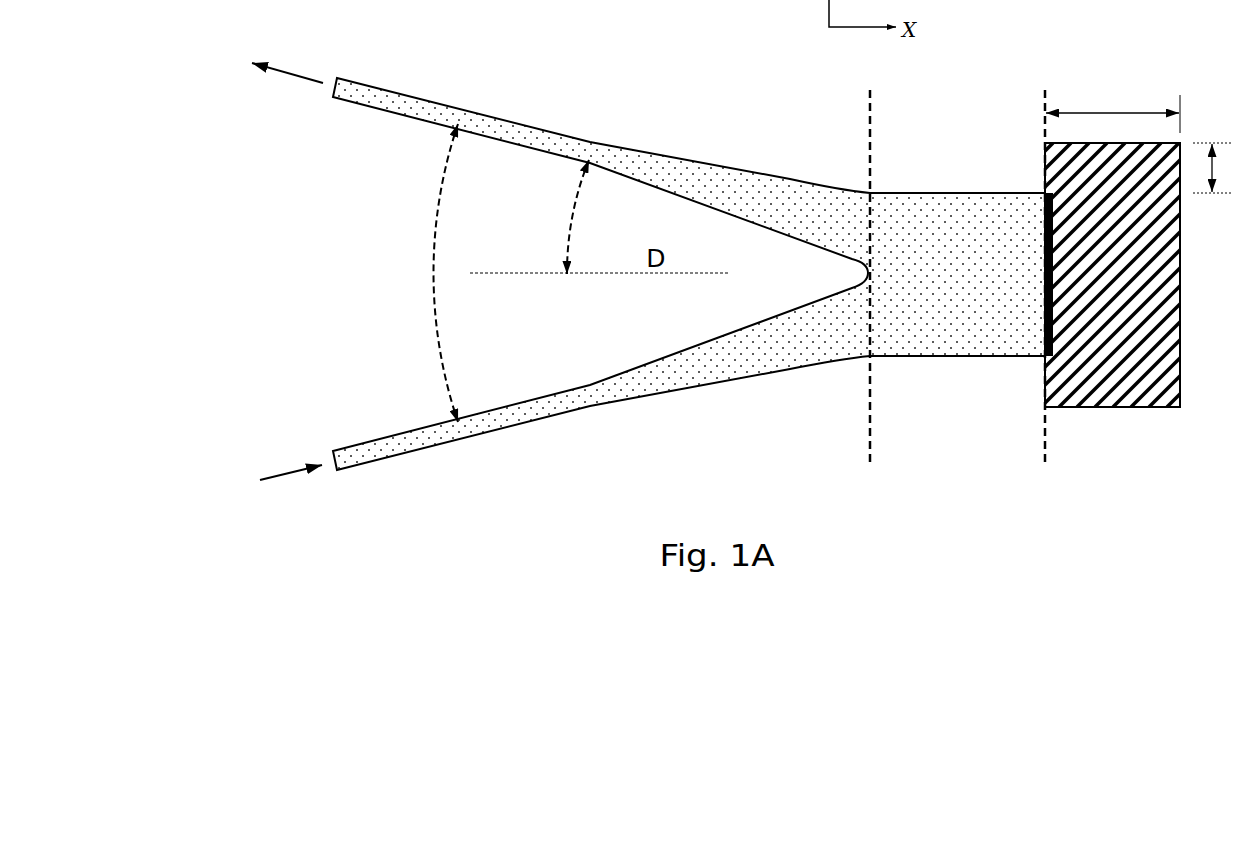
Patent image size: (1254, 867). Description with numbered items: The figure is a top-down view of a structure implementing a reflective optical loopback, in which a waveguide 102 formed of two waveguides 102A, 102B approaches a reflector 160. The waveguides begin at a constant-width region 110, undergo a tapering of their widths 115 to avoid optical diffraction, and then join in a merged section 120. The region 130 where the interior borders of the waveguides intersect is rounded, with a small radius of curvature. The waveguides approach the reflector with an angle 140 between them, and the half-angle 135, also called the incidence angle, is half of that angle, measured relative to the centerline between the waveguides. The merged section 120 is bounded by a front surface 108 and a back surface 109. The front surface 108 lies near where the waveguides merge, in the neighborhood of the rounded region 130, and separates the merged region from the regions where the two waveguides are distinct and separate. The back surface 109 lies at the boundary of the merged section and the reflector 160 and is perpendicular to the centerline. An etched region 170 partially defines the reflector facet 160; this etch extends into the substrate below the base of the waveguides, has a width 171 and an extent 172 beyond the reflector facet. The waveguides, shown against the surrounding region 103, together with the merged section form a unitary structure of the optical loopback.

The waveguide 102 is at (808, 354).
The cladding 103 is at (811, 416).
The waveguide 102A is at (387, 458).
The waveguide 102B is at (383, 110).
The front surface 108 is at (870, 297).
The back surface 109 is at (1045, 297).
The constant-width region 110 is at (471, 76).
The tapering of widths 115 is at (725, 124).
The merged section 120 is at (958, 139).
The rounded region 130 is at (847, 273).
The half-angle 135 is at (558, 217).
The angle 140 is at (423, 273).
The reflector facet 160 is at (1039, 271).
The etched region 170 is at (1128, 287).
The width 171 is at (1113, 102).
The extent 172 is at (1222, 168).